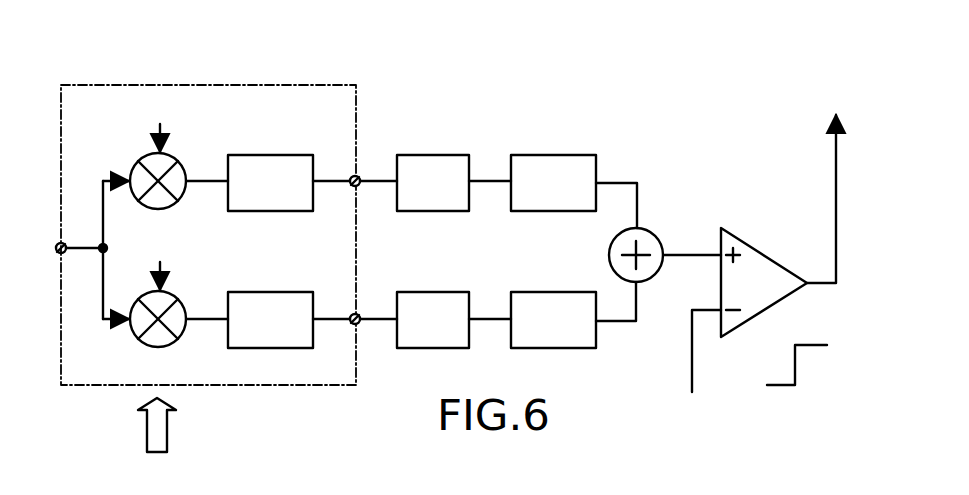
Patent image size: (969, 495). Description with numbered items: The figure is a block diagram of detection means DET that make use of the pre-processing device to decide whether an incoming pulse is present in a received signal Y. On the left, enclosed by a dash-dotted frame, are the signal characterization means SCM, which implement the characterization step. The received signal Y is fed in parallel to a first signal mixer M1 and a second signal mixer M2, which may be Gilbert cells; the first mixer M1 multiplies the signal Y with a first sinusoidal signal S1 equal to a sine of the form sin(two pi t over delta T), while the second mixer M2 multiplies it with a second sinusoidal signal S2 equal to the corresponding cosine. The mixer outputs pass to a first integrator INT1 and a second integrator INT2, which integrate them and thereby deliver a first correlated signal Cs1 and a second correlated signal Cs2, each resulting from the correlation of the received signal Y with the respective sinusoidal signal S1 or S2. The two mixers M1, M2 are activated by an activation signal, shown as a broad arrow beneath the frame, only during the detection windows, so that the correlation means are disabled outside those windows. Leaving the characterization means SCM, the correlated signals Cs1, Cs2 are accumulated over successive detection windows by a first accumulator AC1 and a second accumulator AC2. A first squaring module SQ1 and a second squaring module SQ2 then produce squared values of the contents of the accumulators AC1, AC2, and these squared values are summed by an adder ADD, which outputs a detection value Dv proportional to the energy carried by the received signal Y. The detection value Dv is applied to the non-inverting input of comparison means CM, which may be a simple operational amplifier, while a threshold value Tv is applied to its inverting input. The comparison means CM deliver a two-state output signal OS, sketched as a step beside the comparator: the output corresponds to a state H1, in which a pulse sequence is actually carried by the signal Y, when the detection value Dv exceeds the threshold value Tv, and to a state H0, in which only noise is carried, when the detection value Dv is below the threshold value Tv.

The signal characterization means SCM is at (209, 85).
The detection means DET is at (763, 65).
The received signal Y is at (67, 250).
The first sinusoidal signal S1 is at (157, 120).
The second sinusoidal signal S2 is at (157, 257).
The first signal mixer M1 is at (187, 172).
The second signal mixer M2 is at (185, 331).
The first integrator INT1 is at (249, 183).
The second integrator INT2 is at (249, 320).
The first correlated signal Cs1 is at (376, 181).
The second correlated signal Cs2 is at (376, 319).
The first accumulator AC1 is at (454, 183).
The second accumulator AC2 is at (454, 320).
The first squaring module SQ1 is at (574, 191).
The second squaring module SQ2 is at (573, 315).
The adder ADD is at (641, 228).
The detection value Dv is at (690, 255).
The comparison means CM is at (762, 253).
The output signal OS is at (832, 180).
The threshold value Tv is at (696, 370).
The state H1 is at (806, 346).
The state H0 is at (767, 369).